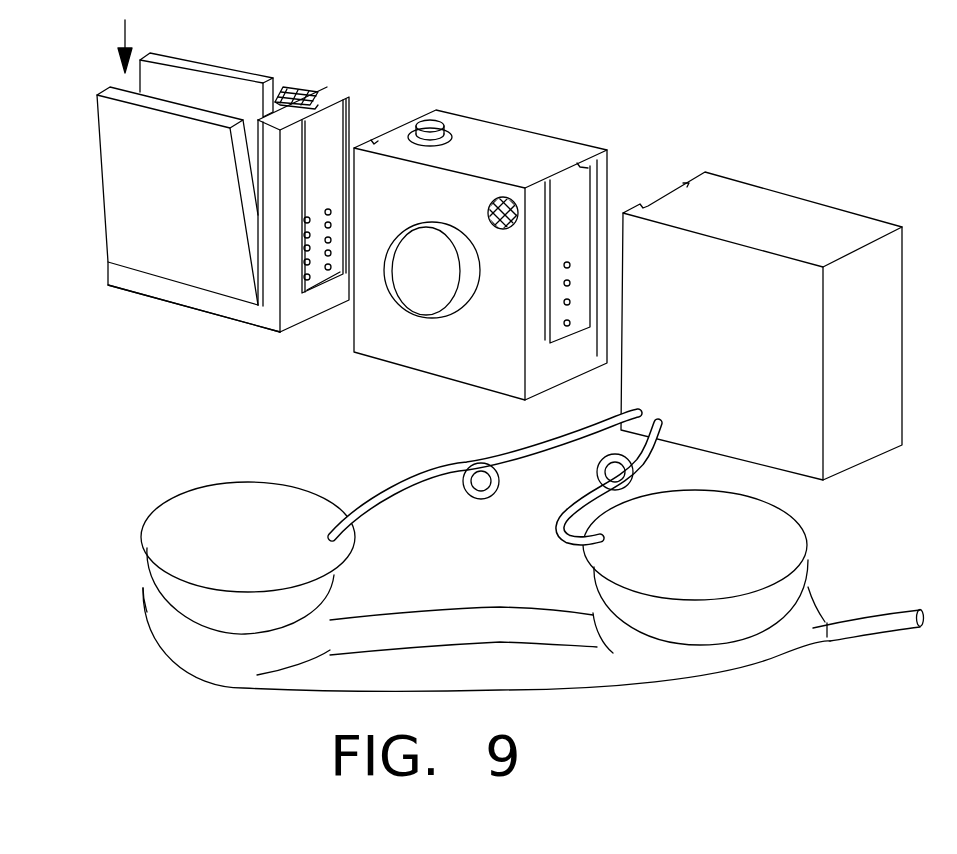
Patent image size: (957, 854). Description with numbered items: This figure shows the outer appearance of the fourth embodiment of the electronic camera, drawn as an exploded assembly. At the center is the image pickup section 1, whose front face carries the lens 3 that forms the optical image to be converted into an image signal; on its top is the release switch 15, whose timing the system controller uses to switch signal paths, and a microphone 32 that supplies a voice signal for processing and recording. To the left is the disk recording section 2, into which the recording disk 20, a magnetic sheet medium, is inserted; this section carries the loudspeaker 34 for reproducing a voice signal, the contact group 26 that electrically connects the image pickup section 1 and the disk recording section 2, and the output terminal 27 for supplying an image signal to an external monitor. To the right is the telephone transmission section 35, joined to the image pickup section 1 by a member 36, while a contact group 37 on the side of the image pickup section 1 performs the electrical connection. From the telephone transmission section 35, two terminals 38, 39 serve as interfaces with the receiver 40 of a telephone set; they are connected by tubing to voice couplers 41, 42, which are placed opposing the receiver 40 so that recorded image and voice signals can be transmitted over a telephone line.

The image pickup section 1 is at (578, 143).
The disk recording section 2 is at (352, 100).
The lens 3 is at (418, 303).
The release switch 15 is at (420, 122).
The recording disk 20 is at (223, 80).
The contact group 26 is at (317, 283).
The output terminal 27 is at (283, 292).
The microphone 32 is at (499, 199).
The loudspeaker 34 is at (295, 88).
The telephone transmission section 35 is at (802, 215).
The member 36 is at (601, 170).
The contact group 37 is at (571, 262).
The terminal 38 is at (610, 428).
The terminal 39 is at (670, 428).
The receiver 40 is at (147, 613).
The voice coupler 41 is at (153, 512).
The voice coupler 42 is at (596, 561).